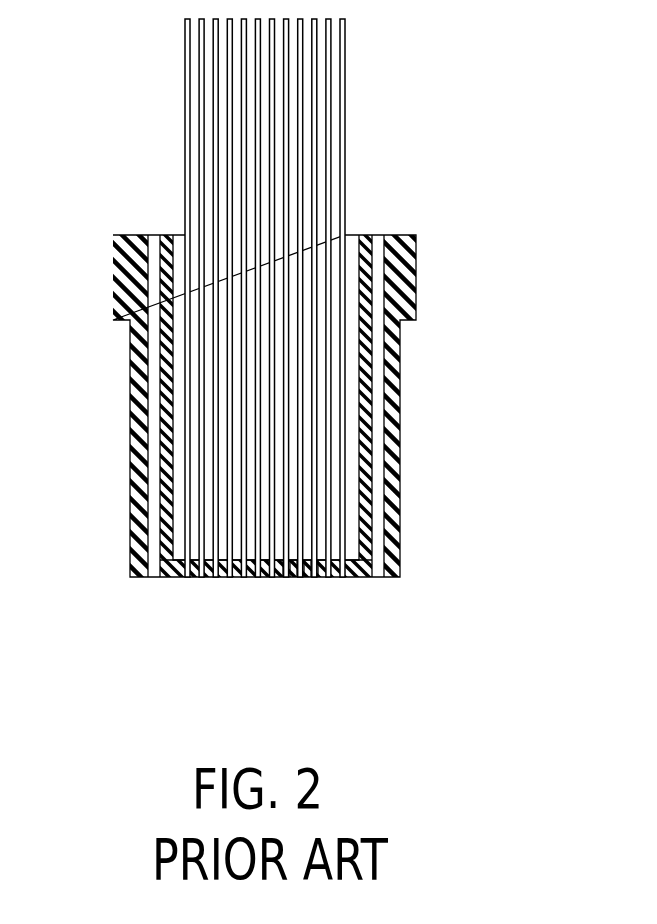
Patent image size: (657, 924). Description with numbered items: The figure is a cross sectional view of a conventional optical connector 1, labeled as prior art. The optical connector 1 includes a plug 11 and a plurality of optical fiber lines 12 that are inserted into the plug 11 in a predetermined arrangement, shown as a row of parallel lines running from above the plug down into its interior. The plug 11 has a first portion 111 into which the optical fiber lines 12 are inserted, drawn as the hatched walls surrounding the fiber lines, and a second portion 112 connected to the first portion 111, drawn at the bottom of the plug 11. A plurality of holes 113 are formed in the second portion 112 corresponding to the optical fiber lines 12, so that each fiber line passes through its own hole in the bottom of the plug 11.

The optical connector 1 is at (328, 351).
The plug 11 is at (110, 441).
The first portion 111 is at (177, 235).
The second portion 112 is at (172, 577).
The holes 113 is at (287, 577).
The optical fiber lines 12 is at (185, 62).